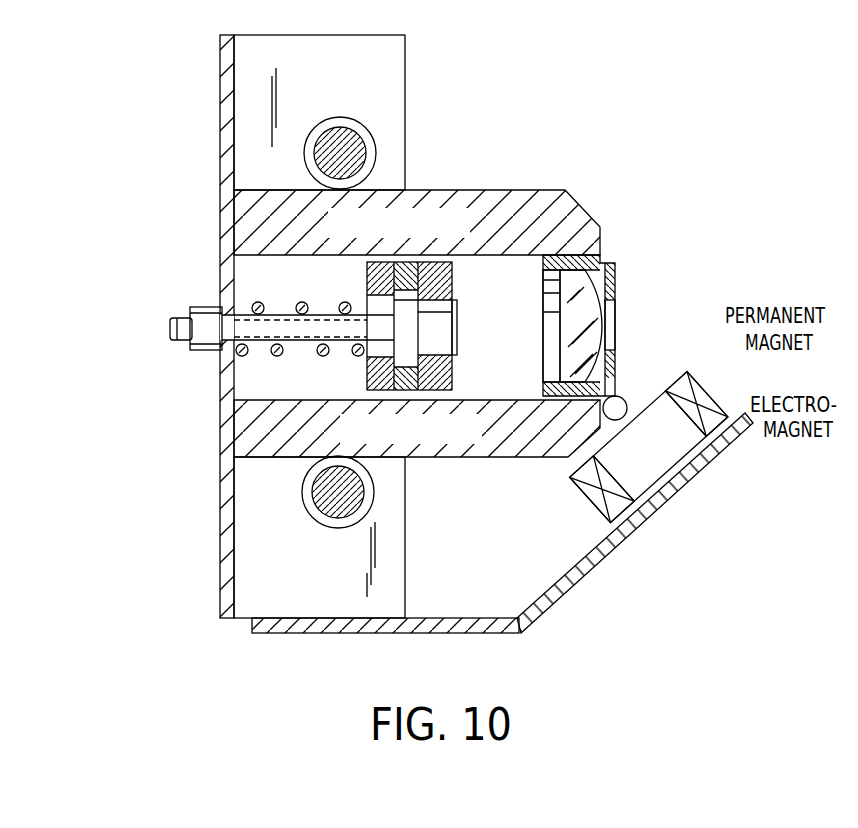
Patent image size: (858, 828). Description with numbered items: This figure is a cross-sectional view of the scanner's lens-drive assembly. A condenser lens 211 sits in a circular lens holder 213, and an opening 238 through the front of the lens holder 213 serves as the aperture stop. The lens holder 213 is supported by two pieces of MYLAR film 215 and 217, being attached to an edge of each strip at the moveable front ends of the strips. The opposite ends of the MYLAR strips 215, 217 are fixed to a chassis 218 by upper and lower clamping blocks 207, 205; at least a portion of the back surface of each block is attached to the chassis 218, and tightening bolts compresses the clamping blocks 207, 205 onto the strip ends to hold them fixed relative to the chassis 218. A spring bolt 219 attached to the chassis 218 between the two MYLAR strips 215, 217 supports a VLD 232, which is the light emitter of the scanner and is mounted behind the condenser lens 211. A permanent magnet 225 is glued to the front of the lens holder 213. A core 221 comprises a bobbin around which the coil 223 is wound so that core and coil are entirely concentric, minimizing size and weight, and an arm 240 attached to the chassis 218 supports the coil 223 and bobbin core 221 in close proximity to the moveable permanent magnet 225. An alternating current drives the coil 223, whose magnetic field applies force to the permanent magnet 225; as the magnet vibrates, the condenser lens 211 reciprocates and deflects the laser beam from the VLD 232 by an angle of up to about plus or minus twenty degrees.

The lower clamping block 205 is at (406, 562).
The upper clamping block 207 is at (405, 68).
The condenser lens 211 is at (616, 286).
The lens holder 213 is at (608, 259).
The MYLAR film strip 215 is at (532, 188).
The MYLAR film strip 217 is at (531, 458).
The chassis 218 is at (228, 97).
The spring bolt 219 is at (177, 341).
The core 221 is at (641, 406).
The coil 223 is at (704, 386).
The permanent magnet 225 is at (620, 397).
The VLD 232 is at (382, 310).
The opening 238 is at (611, 318).
The arm 240 is at (694, 482).